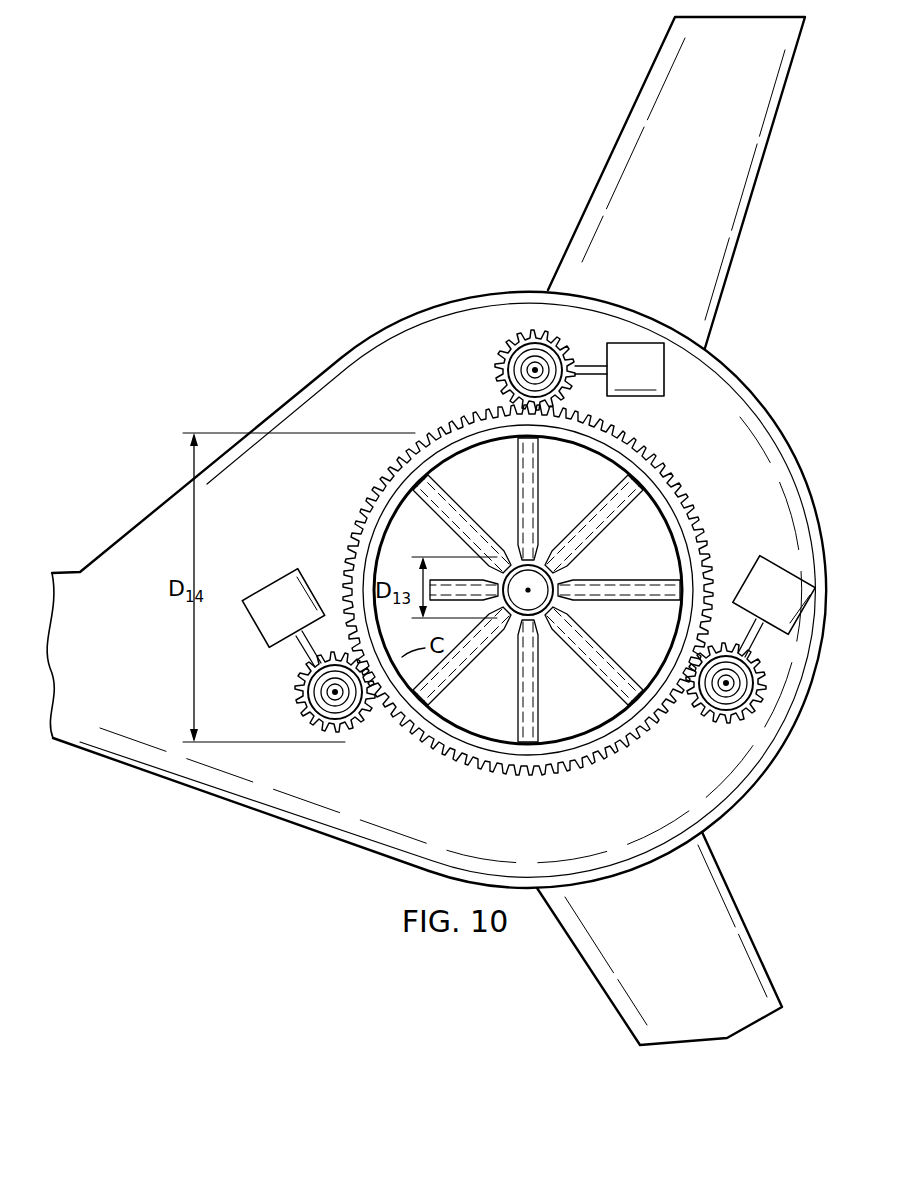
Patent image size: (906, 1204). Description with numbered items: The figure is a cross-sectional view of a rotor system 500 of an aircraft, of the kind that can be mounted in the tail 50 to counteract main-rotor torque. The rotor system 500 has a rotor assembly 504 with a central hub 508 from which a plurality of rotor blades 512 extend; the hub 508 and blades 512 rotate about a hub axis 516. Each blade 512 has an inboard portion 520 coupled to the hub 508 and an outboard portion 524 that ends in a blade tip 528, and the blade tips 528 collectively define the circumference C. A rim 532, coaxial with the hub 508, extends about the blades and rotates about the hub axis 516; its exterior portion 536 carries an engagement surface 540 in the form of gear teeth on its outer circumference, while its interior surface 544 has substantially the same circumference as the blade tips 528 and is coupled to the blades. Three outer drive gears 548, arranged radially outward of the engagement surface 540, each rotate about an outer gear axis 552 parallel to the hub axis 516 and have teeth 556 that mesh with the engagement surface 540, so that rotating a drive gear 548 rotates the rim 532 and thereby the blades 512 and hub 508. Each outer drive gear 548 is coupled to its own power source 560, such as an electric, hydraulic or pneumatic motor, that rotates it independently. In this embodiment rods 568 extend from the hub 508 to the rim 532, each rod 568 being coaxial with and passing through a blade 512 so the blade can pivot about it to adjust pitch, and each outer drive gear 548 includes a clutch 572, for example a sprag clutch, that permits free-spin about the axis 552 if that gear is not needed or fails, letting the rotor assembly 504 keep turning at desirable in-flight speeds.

The tail 50 is at (302, 194).
The rotor system 500 is at (766, 351).
The rotor assembly 504 is at (355, 515).
The hub 508 is at (535, 550).
The rotor blade 512 is at (510, 468).
The hub axis 516 is at (527, 594).
The inboard portion 520 is at (594, 563).
The outboard portion 524 is at (647, 503).
The blade tip 528 is at (617, 488).
The rim 532 is at (630, 419).
The exterior portion 536 is at (383, 478).
The engagement surface 540 is at (356, 531).
The interior surface 544 is at (437, 437).
The outer drive gear 548 is at (531, 343).
The outer gear axis 552 is at (512, 355).
The teeth 556 is at (556, 337).
The power source 560 is at (665, 380).
The rod 568 is at (517, 485).
The clutch 572 is at (524, 370).